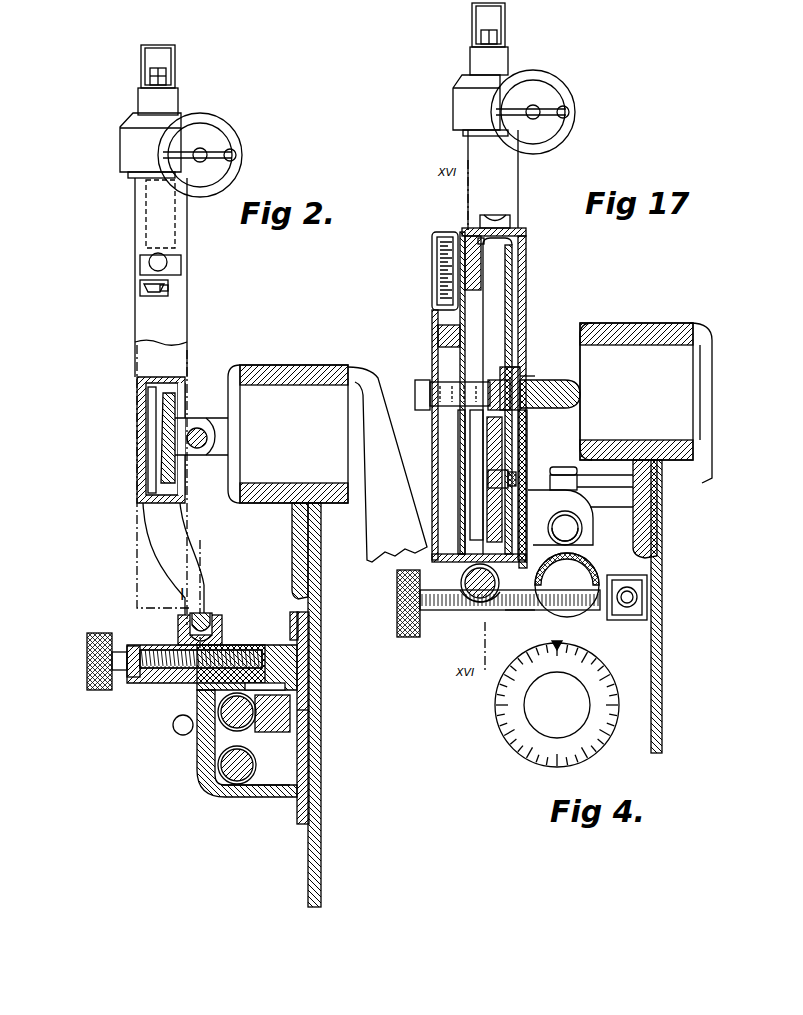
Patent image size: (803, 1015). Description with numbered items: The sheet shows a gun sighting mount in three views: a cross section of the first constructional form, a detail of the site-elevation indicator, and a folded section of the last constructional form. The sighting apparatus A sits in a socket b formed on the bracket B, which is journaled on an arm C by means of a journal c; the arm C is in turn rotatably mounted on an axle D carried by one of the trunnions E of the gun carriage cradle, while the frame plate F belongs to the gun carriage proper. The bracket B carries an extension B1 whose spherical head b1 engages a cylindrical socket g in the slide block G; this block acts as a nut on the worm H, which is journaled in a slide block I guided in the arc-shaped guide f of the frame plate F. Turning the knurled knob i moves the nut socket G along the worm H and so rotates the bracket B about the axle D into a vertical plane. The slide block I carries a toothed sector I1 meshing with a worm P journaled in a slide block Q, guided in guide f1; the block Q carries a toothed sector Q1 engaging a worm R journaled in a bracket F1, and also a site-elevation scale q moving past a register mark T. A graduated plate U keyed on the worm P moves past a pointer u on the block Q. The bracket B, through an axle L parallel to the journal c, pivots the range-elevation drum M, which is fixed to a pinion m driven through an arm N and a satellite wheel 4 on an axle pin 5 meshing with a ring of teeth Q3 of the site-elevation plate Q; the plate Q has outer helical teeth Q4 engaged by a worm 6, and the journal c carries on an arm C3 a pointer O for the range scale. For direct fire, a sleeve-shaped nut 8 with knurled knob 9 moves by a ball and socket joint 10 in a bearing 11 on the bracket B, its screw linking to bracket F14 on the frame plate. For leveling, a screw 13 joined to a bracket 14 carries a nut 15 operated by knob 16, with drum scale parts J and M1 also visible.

In FIG. 2, the sighting apparatus A is at (132, 150).
In FIG. 17, the sighting apparatus A is at (468, 110).
In FIG. 2, the socket b is at (142, 208).
In FIG. 17, the socket b is at (478, 150).
In FIG. 2, the ball J is at (140, 263).
In FIG. 17, the ball J is at (510, 221).
In FIG. 2, the range-elevation drum M is at (140, 290).
In FIG. 17, the range-elevation drum M is at (482, 268).
In FIG. 2, the pointer O is at (170, 289).
In FIG. 17, the pointer O is at (484, 241).
In FIG. 2, the bracket B is at (143, 322).
In FIG. 17, the bracket B is at (440, 316).
In FIG. 2, the trunnion E is at (296, 400).
In FIG. 17, the trunnion E is at (640, 345).
In FIG. 2, the axle D is at (199, 427).
In FIG. 17, the axle D is at (580, 394).
In FIG. 2, the journal c is at (150, 438).
In FIG. 17, the journal c is at (525, 378).
In FIG. 2, the arm C is at (165, 450).
In FIG. 17, the arm C is at (545, 415).
In FIG. 2, the extension B1 is at (160, 535).
In FIG. 2, the spherical head b1 is at (207, 615).
In FIG. 2, the slide block G is at (182, 622).
In FIG. 2, the cylindrical socket g is at (222, 636).
In FIG. 2, the knurled knob i is at (88, 656).
In FIG. 2, the worm H is at (138, 685).
In FIG. 2, the slide block I is at (165, 684).
In FIG. 2, the toothed sector I1 is at (285, 687).
In FIG. 2, the guide f is at (312, 655).
In FIG. 2, the guide f1 is at (312, 712).
In FIG. 2, the worm P is at (200, 736).
In FIG. 4, the worm P is at (548, 735).
In FIG. 2, the slide block Q is at (262, 722).
In FIG. 17, the slide block Q is at (458, 437).
In FIG. 2, the toothed sector Q1 is at (224, 744).
In FIG. 2, the worm R is at (226, 797).
In FIG. 2, the bracket F1 is at (266, 797).
In FIG. 2, the frame plate F is at (322, 796).
In FIG. 17, the frame plate F is at (664, 668).
In FIG. 17, the arm C3 is at (508, 300).
In FIG. 17, the register mark T is at (437, 255).
In FIG. 17, the site-elevation scale q is at (440, 275).
In FIG. 17, the scale plate M1 is at (445, 336).
In FIG. 17, the pinion m is at (516, 368).
In FIG. 17, the axle L is at (445, 400).
In FIG. 17, the arm N is at (505, 450).
In FIG. 17, the bracket bolt F14 is at (597, 484).
In FIG. 17, the axle pin 5 is at (490, 477).
In FIG. 17, the satellite wheel 4 is at (475, 495).
In FIG. 17, the ring of teeth Q3 is at (548, 528).
In FIG. 17, the ball and socket joint 10 is at (583, 522).
In FIG. 17, the bearing 11 is at (588, 542).
In FIG. 17, the sleeve-shaped nut 8 is at (556, 535).
In FIG. 17, the knob 16 is at (398, 590).
In FIG. 17, the helical teeth Q4 is at (462, 580).
In FIG. 17, the nut 15 is at (446, 612).
In FIG. 17, the worm 6 is at (492, 610).
In FIG. 17, the screw 13 is at (522, 610).
In FIG. 17, the knurled knob 9 is at (573, 610).
In FIG. 17, the bracket 14 is at (650, 597).
In FIG. 4, the pointer u is at (565, 643).
In FIG. 4, the graduated plate U is at (612, 696).